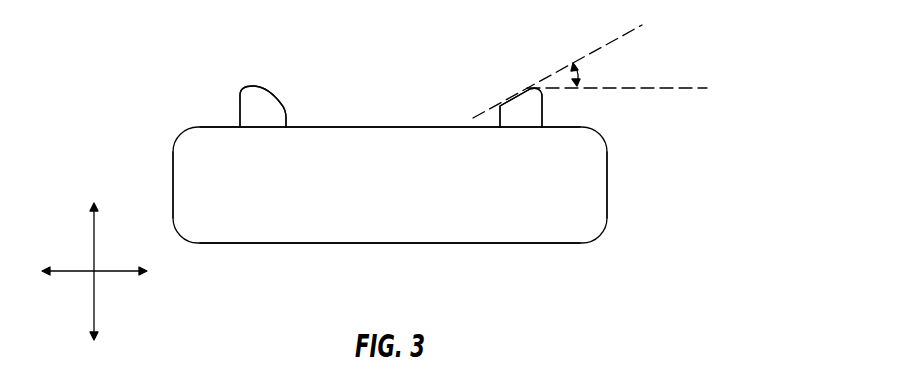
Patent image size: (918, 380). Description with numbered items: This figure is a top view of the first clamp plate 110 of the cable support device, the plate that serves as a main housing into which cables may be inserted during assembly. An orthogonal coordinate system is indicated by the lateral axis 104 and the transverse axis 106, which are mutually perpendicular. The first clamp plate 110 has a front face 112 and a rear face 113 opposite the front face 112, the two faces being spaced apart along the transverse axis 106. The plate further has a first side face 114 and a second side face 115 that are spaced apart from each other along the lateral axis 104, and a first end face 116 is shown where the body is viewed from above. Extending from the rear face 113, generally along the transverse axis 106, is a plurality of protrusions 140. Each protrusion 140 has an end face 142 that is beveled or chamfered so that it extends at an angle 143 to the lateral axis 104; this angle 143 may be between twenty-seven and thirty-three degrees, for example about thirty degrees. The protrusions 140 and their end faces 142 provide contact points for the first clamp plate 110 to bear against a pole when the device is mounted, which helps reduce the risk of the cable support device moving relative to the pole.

The lateral axis 104 is at (83, 272).
The transverse axis 106 is at (93, 240).
The first clamp plate 110 is at (156, 106).
The front face 112 is at (332, 243).
The rear face 113 is at (335, 127).
The first side face 114 is at (173, 177).
The second side face 115 is at (607, 168).
The first end face 116 is at (573, 203).
The protrusion 140 is at (240, 82).
The end face of protrusion 142 is at (267, 87).
The angle 143 is at (580, 73).